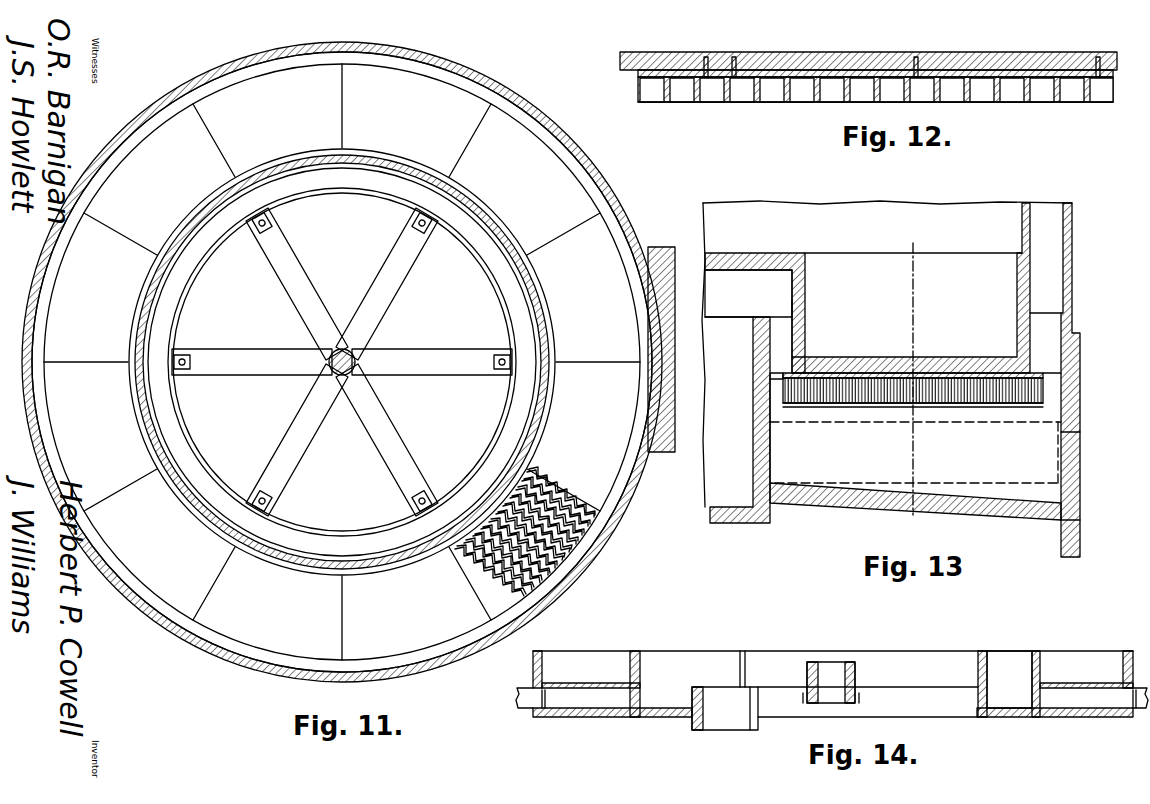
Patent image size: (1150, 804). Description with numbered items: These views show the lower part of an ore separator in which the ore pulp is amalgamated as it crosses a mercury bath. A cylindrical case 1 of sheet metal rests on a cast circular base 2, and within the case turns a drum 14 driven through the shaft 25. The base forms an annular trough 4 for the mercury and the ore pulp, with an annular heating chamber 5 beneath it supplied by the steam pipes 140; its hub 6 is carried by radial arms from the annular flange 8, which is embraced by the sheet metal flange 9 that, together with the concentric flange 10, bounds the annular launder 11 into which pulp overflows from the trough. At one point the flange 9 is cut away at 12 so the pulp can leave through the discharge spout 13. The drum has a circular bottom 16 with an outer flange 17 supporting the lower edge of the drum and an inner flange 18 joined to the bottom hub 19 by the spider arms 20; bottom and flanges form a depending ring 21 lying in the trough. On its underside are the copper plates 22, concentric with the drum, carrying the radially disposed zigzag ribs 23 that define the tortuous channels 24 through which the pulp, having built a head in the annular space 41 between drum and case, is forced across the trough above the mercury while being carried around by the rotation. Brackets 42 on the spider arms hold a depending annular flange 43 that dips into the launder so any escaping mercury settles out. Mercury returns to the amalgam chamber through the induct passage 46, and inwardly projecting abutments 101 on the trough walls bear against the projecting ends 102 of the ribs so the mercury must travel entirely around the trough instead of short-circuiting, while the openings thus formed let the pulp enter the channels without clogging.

In FIG. 11, the cylindrical case 1 is at (596, 169).
In FIG. 13, the cylindrical case 1 is at (1073, 268).
In FIG. 11, the circular base 2 is at (613, 544).
In FIG. 13, the circular base 2 is at (1081, 354).
In FIG. 14, the circular base 2 is at (532, 672).
In FIG. 11, the annular trough 4 is at (148, 595).
In FIG. 13, the annular trough 4 is at (778, 336).
In FIG. 14, the annular trough 4 is at (580, 672).
In FIG. 14, the annular heating chamber 5 is at (595, 703).
In FIG. 14, the hub 6 is at (857, 672).
In FIG. 14, the annular flange 8 is at (945, 690).
In FIG. 14, the sheet metal flange 9 is at (968, 657).
In FIG. 11, the concentric flange 10 is at (536, 427).
In FIG. 13, the concentric flange 10 is at (737, 406).
In FIG. 14, the concentric flange 10 is at (642, 653).
In FIG. 14, the annular launder 11 is at (997, 672).
In FIG. 11, the cut-away portion 12 is at (572, 483).
In FIG. 14, the cut-away portion 12 is at (741, 655).
In FIG. 14, the discharge spout 13 is at (725, 722).
In FIG. 13, the drum 14 is at (990, 208).
In FIG. 12, the circular bottom 16 is at (626, 72).
In FIG. 13, the circular bottom 16 is at (958, 358).
In FIG. 13, the outer flange 17 is at (1016, 301).
In FIG. 13, the inner flange 18 is at (807, 331).
In FIG. 13, the bottom hub 19 is at (915, 383).
In FIG. 11, the spider arms 20 is at (392, 292).
In FIG. 13, the spider arms 20 is at (740, 254).
In FIG. 13, the depending ring 21 is at (791, 364).
In FIG. 11, the copper plates 22 is at (342, 362).
In FIG. 12, the copper plates 22 is at (767, 80).
In FIG. 13, the copper plates 22 is at (893, 371).
In FIG. 11, the zigzag ribs 23 is at (588, 515).
In FIG. 12, the zigzag ribs 23 is at (995, 102).
In FIG. 13, the zigzag ribs 23 is at (847, 388).
In FIG. 12, the channels 24 is at (798, 97).
In FIG. 11, the shaft 25 is at (358, 369).
In FIG. 13, the annular space 41 is at (1045, 210).
In FIG. 11, the brackets 42 is at (503, 368).
In FIG. 11, the depending annular flange 43 is at (355, 528).
In FIG. 13, the induct passage 46 is at (1037, 470).
In FIG. 11, the abutments 101 is at (657, 373).
In FIG. 13, the abutments 101 is at (775, 400).
In FIG. 11, the projecting ends 102 is at (503, 486).
In FIG. 13, the projecting ends 102 is at (788, 400).
In FIG. 14, the steam pipes 140 is at (527, 703).